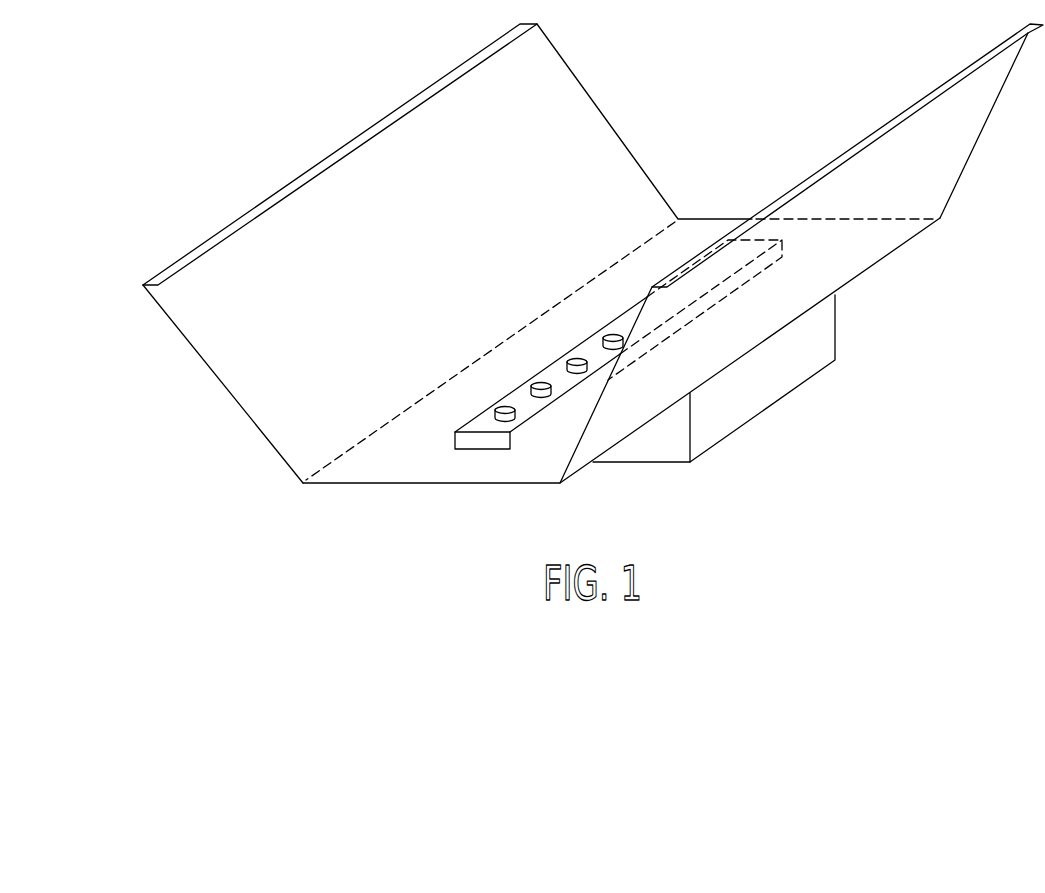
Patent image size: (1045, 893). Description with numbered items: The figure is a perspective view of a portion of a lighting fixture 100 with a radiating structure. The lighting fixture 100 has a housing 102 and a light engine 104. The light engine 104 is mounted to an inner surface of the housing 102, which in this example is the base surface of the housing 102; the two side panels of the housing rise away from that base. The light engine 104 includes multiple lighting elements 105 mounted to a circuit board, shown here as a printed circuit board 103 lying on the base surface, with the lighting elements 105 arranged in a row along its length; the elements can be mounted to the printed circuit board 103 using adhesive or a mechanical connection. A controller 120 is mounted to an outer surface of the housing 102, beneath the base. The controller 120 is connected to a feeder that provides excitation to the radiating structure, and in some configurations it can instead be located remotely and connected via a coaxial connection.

The lighting fixture 100 is at (243, 96).
The housing 102 is at (233, 425).
The printed circuit board 103 is at (483, 439).
The light engine 104 is at (443, 443).
The lighting elements 105 is at (505, 404).
The controller 120 is at (767, 418).